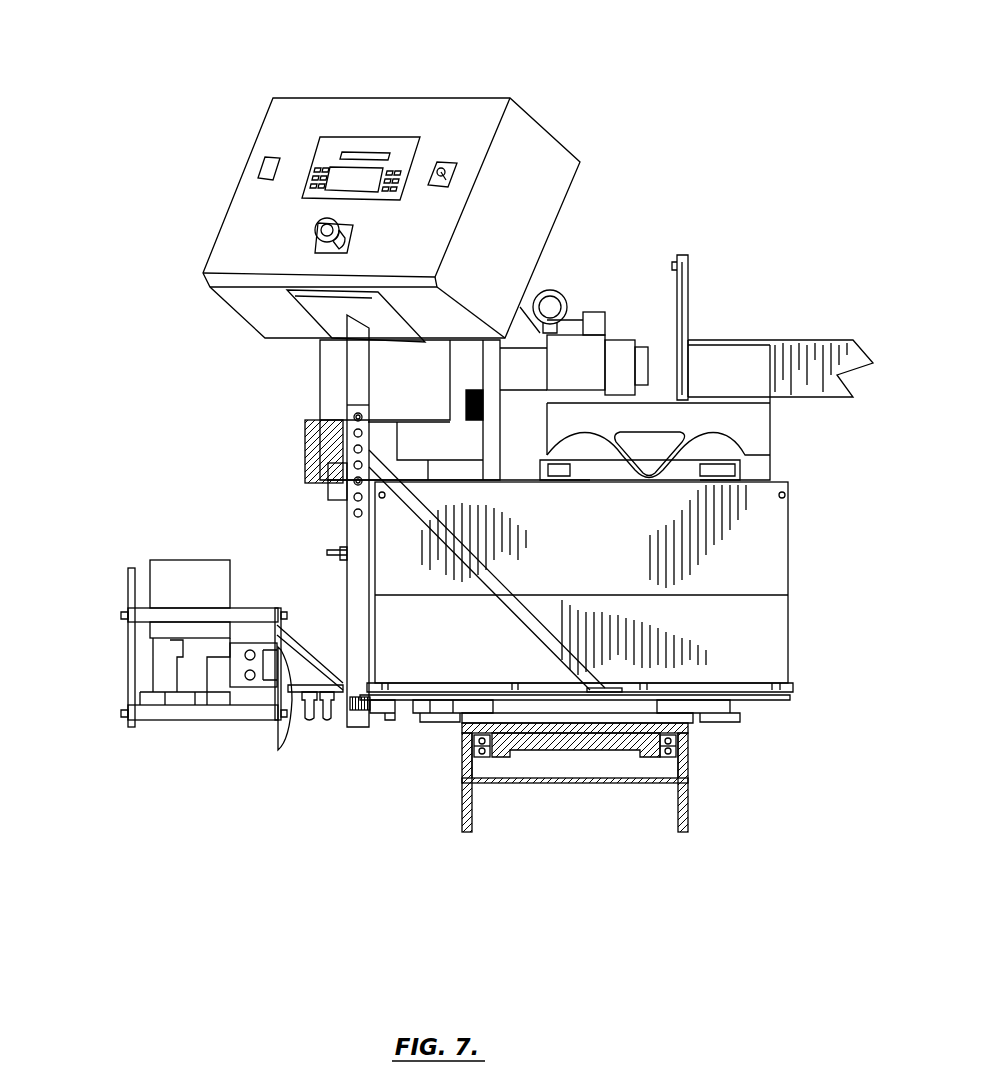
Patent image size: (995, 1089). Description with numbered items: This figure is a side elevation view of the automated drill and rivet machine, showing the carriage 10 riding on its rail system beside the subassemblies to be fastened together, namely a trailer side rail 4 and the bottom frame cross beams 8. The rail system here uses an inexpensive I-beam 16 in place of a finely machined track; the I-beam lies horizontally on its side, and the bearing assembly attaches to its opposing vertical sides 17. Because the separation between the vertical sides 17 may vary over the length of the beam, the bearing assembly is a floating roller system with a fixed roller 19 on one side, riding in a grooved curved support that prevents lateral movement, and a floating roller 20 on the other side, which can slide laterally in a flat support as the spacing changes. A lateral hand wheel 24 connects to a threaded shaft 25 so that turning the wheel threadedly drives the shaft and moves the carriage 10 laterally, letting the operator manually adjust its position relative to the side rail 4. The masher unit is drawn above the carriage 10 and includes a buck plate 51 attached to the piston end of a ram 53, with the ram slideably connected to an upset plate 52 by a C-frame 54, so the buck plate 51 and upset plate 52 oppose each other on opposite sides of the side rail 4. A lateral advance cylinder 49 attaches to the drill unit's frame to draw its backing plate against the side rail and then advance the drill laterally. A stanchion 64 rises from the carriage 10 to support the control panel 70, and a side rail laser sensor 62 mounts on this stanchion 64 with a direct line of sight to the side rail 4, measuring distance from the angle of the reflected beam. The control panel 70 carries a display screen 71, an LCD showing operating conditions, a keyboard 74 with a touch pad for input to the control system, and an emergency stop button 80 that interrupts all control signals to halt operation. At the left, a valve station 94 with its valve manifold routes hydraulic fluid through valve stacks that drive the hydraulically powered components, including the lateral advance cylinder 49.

The control panel 70 is at (342, 117).
The display screen 71 is at (342, 157).
The keyboard 74 is at (320, 170).
The emergency stop button 80 is at (317, 222).
The ram 53 is at (330, 368).
The side rail laser sensor 62 is at (318, 442).
The lateral advance cylinder 49 is at (330, 488).
The buck plate 51 is at (583, 340).
The upset plate 52 is at (687, 360).
The trailer side rail 4 is at (688, 373).
The bottom frame cross beams 8 is at (793, 340).
The C-frame 54 is at (643, 420).
The carriage 10 is at (822, 630).
The stanchion 64 is at (340, 603).
The I-beam 16 is at (550, 783).
The vertical sides 17 is at (462, 790).
The floating roller 20 is at (474, 748).
The fixed roller 19 is at (678, 748).
The valve station 94 is at (104, 652).
The lateral hand wheel 24 is at (280, 752).
The threaded shaft 25 is at (355, 715).